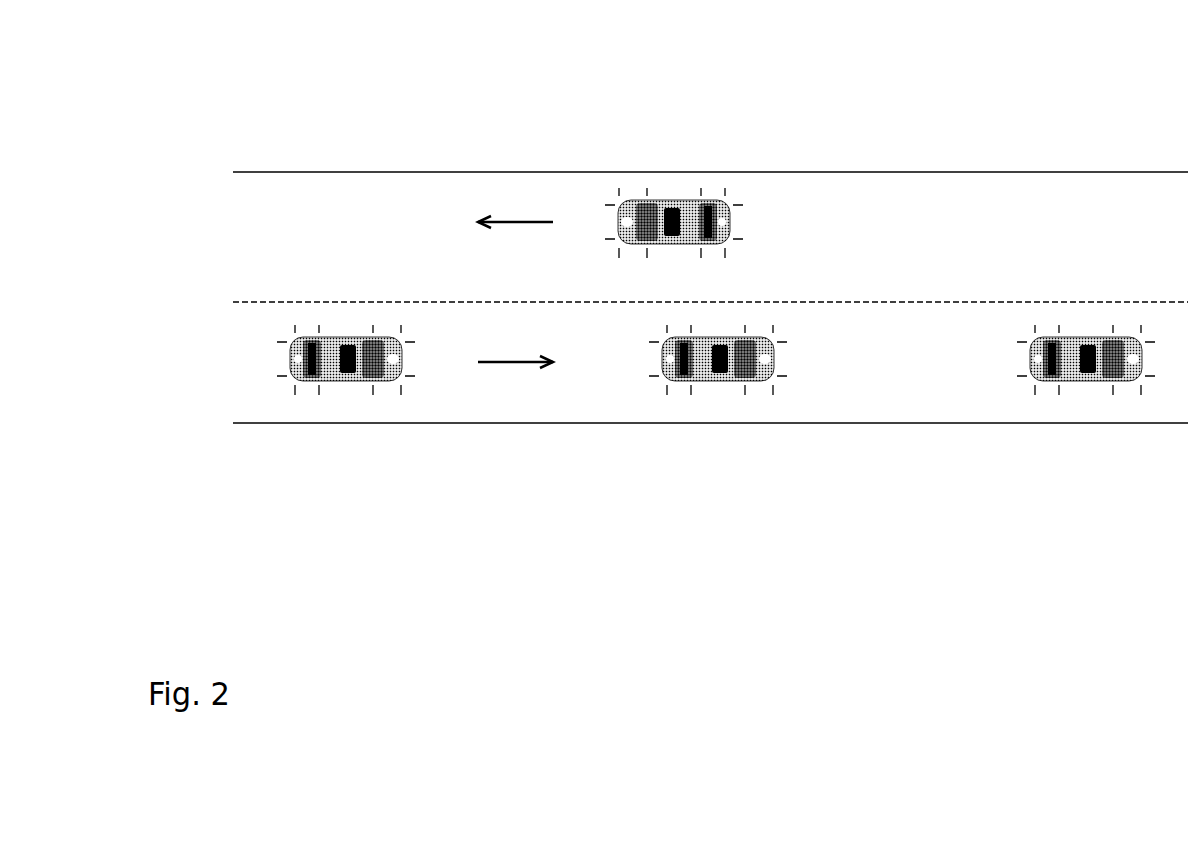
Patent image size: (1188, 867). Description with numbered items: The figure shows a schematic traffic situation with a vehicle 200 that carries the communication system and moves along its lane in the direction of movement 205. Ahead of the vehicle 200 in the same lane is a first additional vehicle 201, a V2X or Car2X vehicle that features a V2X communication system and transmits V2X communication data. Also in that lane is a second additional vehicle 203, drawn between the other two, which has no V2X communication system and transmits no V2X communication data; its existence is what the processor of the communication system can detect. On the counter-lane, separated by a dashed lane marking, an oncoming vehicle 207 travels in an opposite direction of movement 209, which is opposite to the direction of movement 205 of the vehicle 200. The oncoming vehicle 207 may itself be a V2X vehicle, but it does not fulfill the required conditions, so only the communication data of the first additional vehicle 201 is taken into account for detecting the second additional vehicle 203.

The vehicle 200 is at (343, 428).
The first additional vehicle 201 is at (1083, 428).
The second additional vehicle 203 is at (710, 428).
The direction of movement 205 is at (515, 365).
The oncoming vehicle 207 is at (675, 183).
The opposite direction of movement 209 is at (520, 218).